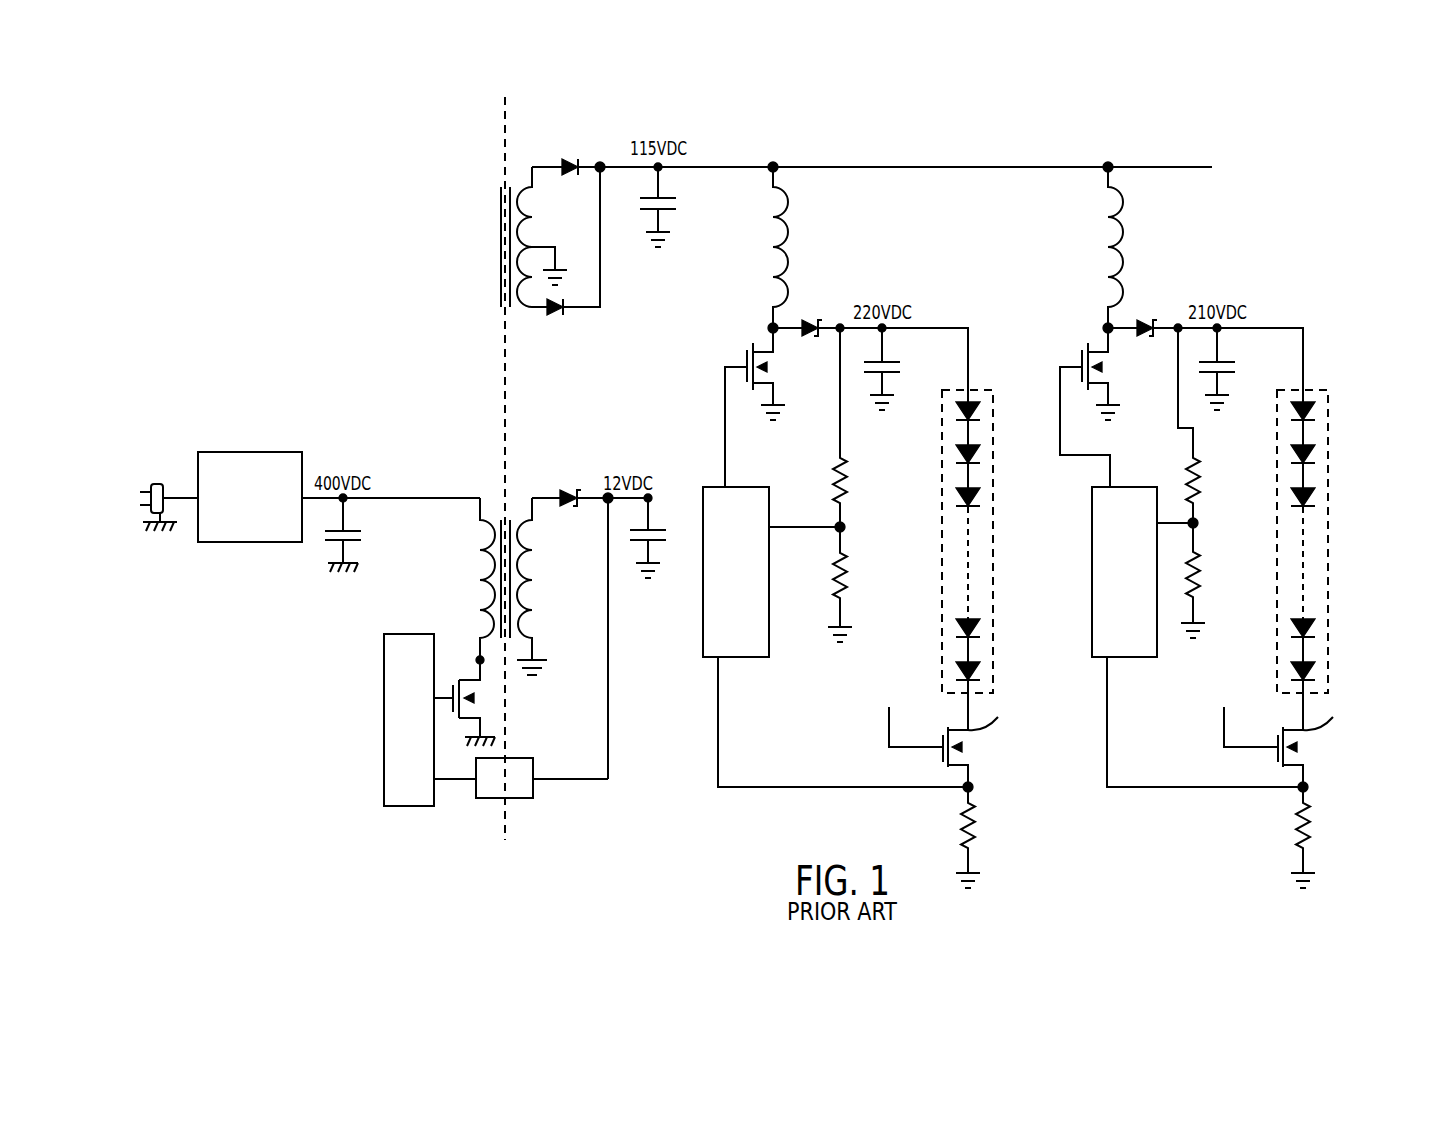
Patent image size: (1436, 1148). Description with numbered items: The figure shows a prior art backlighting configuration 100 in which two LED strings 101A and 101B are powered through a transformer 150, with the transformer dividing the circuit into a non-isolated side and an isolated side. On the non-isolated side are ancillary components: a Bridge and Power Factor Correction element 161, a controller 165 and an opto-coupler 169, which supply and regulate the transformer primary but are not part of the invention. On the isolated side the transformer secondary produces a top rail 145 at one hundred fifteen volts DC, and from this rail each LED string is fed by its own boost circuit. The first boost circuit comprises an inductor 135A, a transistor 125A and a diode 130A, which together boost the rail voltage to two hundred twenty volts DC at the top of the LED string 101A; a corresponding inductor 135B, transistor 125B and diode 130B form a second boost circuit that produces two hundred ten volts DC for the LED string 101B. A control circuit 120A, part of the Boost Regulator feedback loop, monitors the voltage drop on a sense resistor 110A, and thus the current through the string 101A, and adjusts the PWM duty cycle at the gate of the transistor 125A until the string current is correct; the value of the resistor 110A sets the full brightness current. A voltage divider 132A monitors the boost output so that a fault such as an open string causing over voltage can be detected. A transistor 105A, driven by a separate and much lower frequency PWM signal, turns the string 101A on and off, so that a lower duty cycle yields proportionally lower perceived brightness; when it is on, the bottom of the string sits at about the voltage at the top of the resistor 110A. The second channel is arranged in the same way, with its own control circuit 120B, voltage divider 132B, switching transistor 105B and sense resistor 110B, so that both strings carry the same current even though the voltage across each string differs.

The backlighting configuration 100 is at (905, 128).
The DC bus (115VDC rail) 145 is at (1155, 167).
The transformer 150 is at (468, 335).
The Bridge and Power Factor Correction element 161 is at (226, 452).
The controller 165 is at (422, 729).
The opto-coupler 169 is at (522, 798).
The inductor 135A is at (788, 232).
The inductor 135B is at (1123, 232).
The diode 130A is at (807, 317).
The diode 130B is at (1142, 317).
The transistor 125A is at (744, 344).
The transistor 125B is at (1079, 344).
The control circuit 120A is at (755, 583).
The boost controller 120B is at (1144, 583).
The voltage divider 132A is at (862, 455).
The feedback voltage divider 132B is at (1205, 455).
The LED string 101A is at (993, 650).
The LED string 101B is at (1328, 650).
The transistor 105A is at (983, 747).
The PWM dimming transistor 105B is at (1318, 747).
The sense resistor 110A is at (985, 825).
The current sense resistor 110B is at (1320, 825).